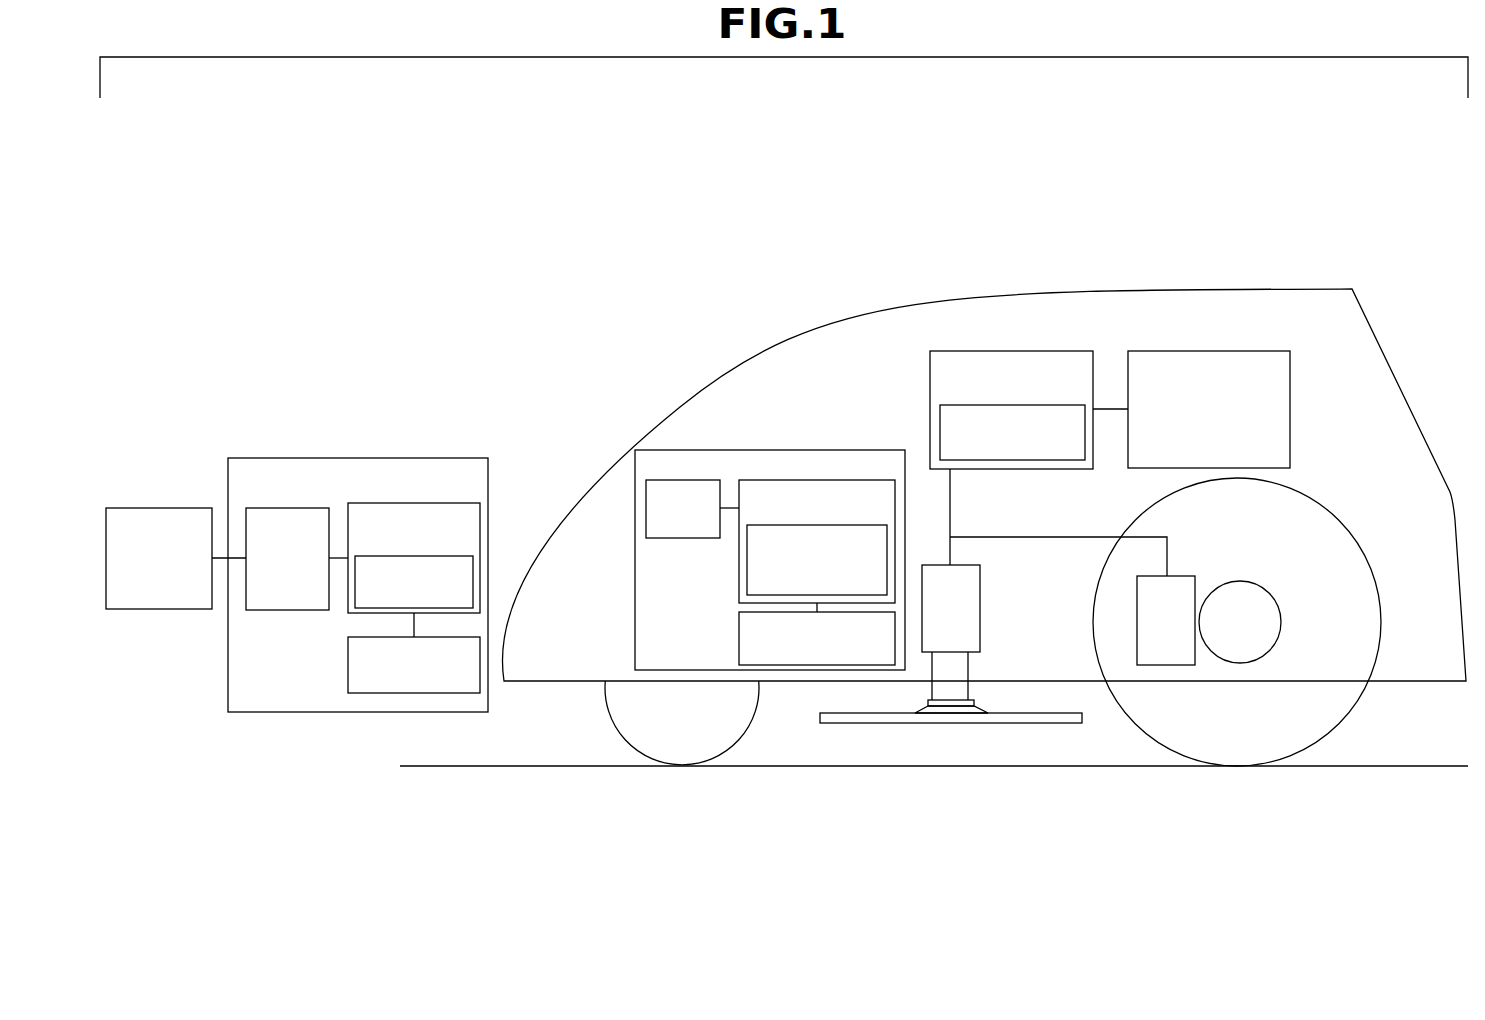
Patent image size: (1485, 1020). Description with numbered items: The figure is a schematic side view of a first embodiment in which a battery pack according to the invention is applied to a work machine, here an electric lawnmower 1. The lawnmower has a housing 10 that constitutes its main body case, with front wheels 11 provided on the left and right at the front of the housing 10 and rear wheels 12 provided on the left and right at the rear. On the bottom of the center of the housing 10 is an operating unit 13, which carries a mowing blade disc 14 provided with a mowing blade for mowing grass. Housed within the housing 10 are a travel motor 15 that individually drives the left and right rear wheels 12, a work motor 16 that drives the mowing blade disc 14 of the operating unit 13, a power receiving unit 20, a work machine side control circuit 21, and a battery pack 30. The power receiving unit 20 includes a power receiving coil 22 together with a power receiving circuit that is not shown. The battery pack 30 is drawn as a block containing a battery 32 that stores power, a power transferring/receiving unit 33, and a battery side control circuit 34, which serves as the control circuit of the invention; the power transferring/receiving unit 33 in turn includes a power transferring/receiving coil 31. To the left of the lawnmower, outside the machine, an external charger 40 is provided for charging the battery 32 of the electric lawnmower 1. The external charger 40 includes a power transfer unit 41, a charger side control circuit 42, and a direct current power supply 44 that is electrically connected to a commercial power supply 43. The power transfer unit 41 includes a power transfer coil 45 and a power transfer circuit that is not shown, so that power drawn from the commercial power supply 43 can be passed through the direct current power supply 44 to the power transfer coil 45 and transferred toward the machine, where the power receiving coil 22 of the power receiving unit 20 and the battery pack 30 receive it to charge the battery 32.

The electric lawnmower 1 is at (1065, 197).
The housing 10 is at (1217, 288).
The front wheels 11 is at (665, 733).
The rear wheels 12 is at (1218, 730).
The operating unit 13 is at (945, 740).
The mowing blade disc 14 is at (887, 723).
The travel motor 15 is at (1165, 667).
The work motor 16 is at (972, 628).
The power receiving unit 20 is at (977, 351).
The work machine side control circuit 21 is at (1165, 351).
The power receiving coil 22 is at (1082, 405).
The battery pack 30 is at (683, 450).
The power transferring/receiving coil 31 is at (883, 525).
The battery 32 is at (652, 480).
The power transferring/receiving unit 33 is at (828, 480).
The battery side control circuit 34 is at (822, 667).
The external charger 40 is at (335, 458).
The power transfer unit 41 is at (467, 503).
The charger side control circuit 42 is at (424, 693).
The commercial power supply 43 is at (140, 507).
The direct current power supply 44 is at (253, 507).
The power transfer coil 45 is at (472, 556).